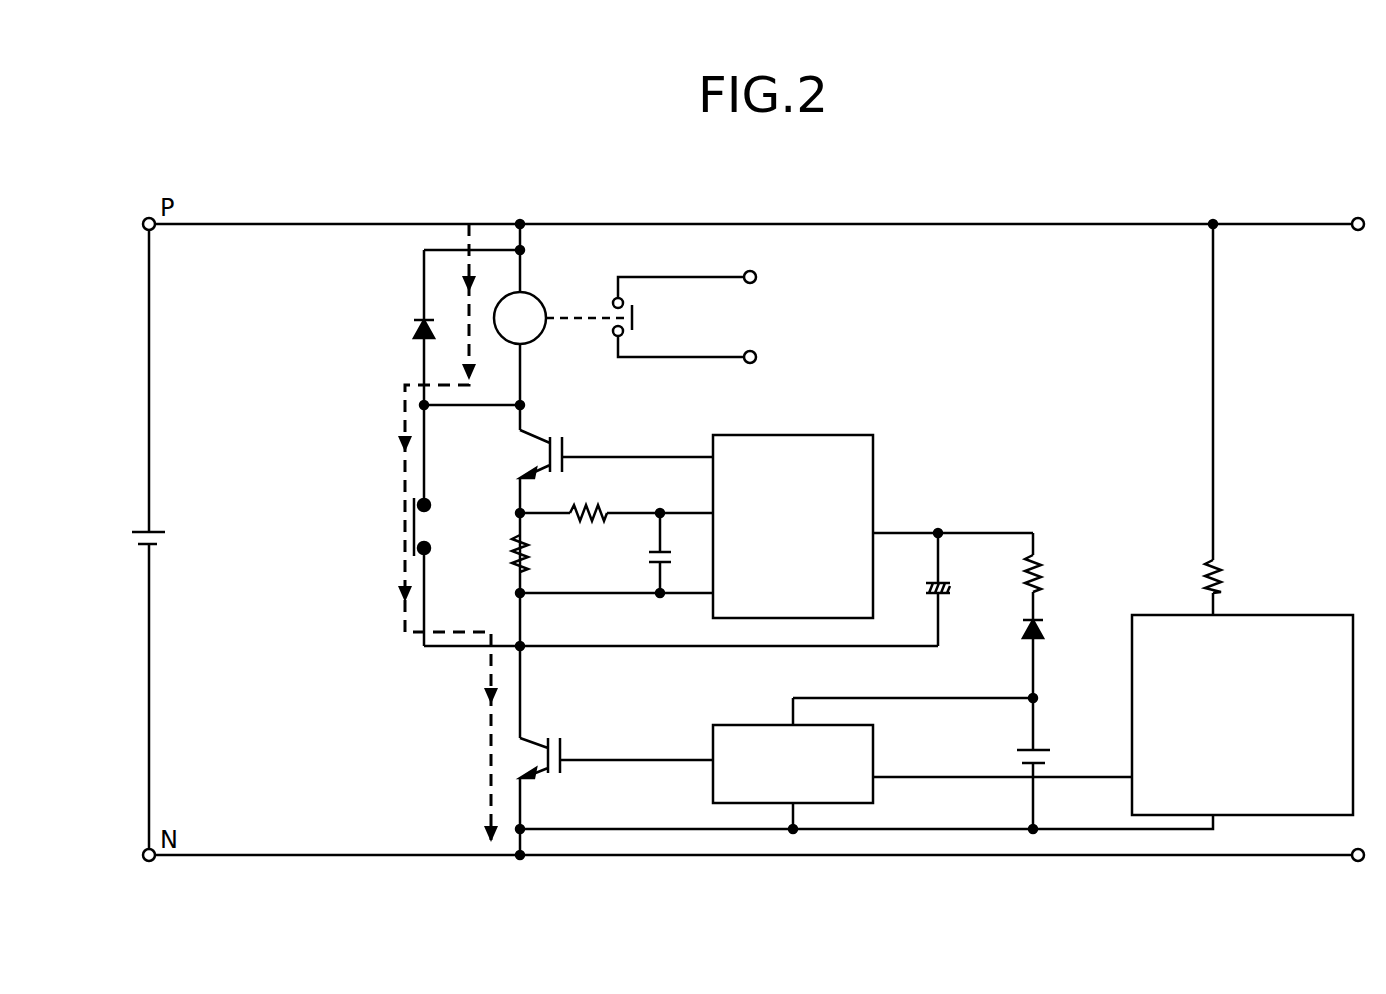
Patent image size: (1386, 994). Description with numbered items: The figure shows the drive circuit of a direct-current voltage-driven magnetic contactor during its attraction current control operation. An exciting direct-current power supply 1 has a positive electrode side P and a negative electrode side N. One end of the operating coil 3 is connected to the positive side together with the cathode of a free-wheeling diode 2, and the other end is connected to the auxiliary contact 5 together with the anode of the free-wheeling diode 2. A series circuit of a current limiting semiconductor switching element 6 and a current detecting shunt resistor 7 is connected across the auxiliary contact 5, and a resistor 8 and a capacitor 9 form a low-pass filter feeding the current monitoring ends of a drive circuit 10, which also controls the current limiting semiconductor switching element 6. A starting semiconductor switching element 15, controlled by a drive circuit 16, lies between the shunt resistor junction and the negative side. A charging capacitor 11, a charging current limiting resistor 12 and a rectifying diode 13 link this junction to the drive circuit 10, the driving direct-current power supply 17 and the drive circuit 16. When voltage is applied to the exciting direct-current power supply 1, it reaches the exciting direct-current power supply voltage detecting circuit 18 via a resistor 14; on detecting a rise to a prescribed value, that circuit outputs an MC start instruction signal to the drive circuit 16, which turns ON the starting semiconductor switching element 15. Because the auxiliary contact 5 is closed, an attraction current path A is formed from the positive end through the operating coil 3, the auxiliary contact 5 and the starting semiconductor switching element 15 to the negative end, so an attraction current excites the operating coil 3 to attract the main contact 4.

The exciting direct-current power supply 1 is at (130, 540).
The free-wheeling diode 2 is at (414, 328).
The operating coil 3 is at (545, 297).
The main contact 4 is at (636, 318).
The auxiliary contact 5 is at (414, 528).
The current limiting semiconductor switching element 6 is at (560, 437).
The current detecting shunt resistor 7 is at (516, 555).
The resistor 8 is at (602, 507).
The capacitor 9 is at (646, 582).
The drive circuit 10 is at (873, 440).
The charging capacitor 11 is at (958, 582).
The charging current limiting resistor 12 is at (1045, 565).
The rectifying diode 13 is at (1045, 626).
The resistor 14 is at (1225, 570).
The starting semiconductor switching element 15 is at (560, 738).
The drive circuit 16 is at (840, 803).
The driving direct-current power supply 17 is at (1055, 750).
The exciting direct-current power supply voltage detecting circuit 18 is at (1322, 615).
The attraction current path A is at (488, 755).